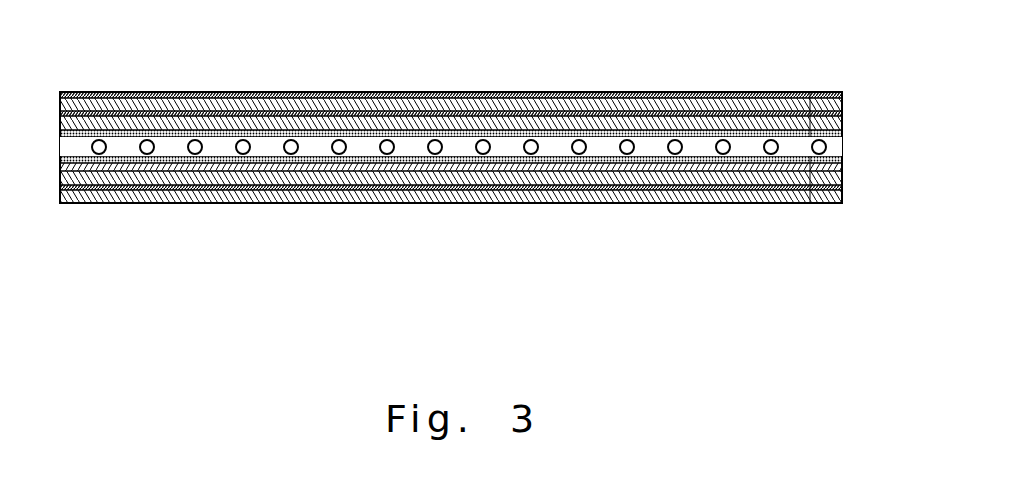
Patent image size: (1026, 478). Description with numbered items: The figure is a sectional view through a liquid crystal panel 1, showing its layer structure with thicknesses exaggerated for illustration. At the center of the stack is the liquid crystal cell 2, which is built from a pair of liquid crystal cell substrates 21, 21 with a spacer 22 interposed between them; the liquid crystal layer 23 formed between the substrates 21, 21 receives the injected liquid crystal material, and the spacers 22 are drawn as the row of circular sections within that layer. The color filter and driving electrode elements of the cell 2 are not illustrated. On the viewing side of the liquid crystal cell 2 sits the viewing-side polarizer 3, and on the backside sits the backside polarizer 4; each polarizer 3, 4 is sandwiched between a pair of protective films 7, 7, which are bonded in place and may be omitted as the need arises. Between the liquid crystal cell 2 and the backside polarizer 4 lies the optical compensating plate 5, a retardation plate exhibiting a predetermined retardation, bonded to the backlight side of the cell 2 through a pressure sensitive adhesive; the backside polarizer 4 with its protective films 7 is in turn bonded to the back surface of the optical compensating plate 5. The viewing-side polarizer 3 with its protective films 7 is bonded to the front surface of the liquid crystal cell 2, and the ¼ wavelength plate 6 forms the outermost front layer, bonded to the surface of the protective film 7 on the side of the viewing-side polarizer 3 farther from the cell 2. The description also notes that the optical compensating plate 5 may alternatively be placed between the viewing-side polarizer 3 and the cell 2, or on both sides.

The liquid crystal panel 1 is at (472, 178).
The liquid crystal cell 2 is at (472, 124).
The liquid crystal cell substrate 21 is at (842, 137).
The spacer 22 is at (147, 151).
The liquid crystal layer 23 is at (128, 143).
The viewing-side polarizer 3 is at (467, 113).
The backside polarizer 4 is at (667, 190).
The optical compensating plate 5 is at (502, 170).
The ¼ wavelength plate 6 is at (700, 93).
The protective film 7 is at (842, 123).